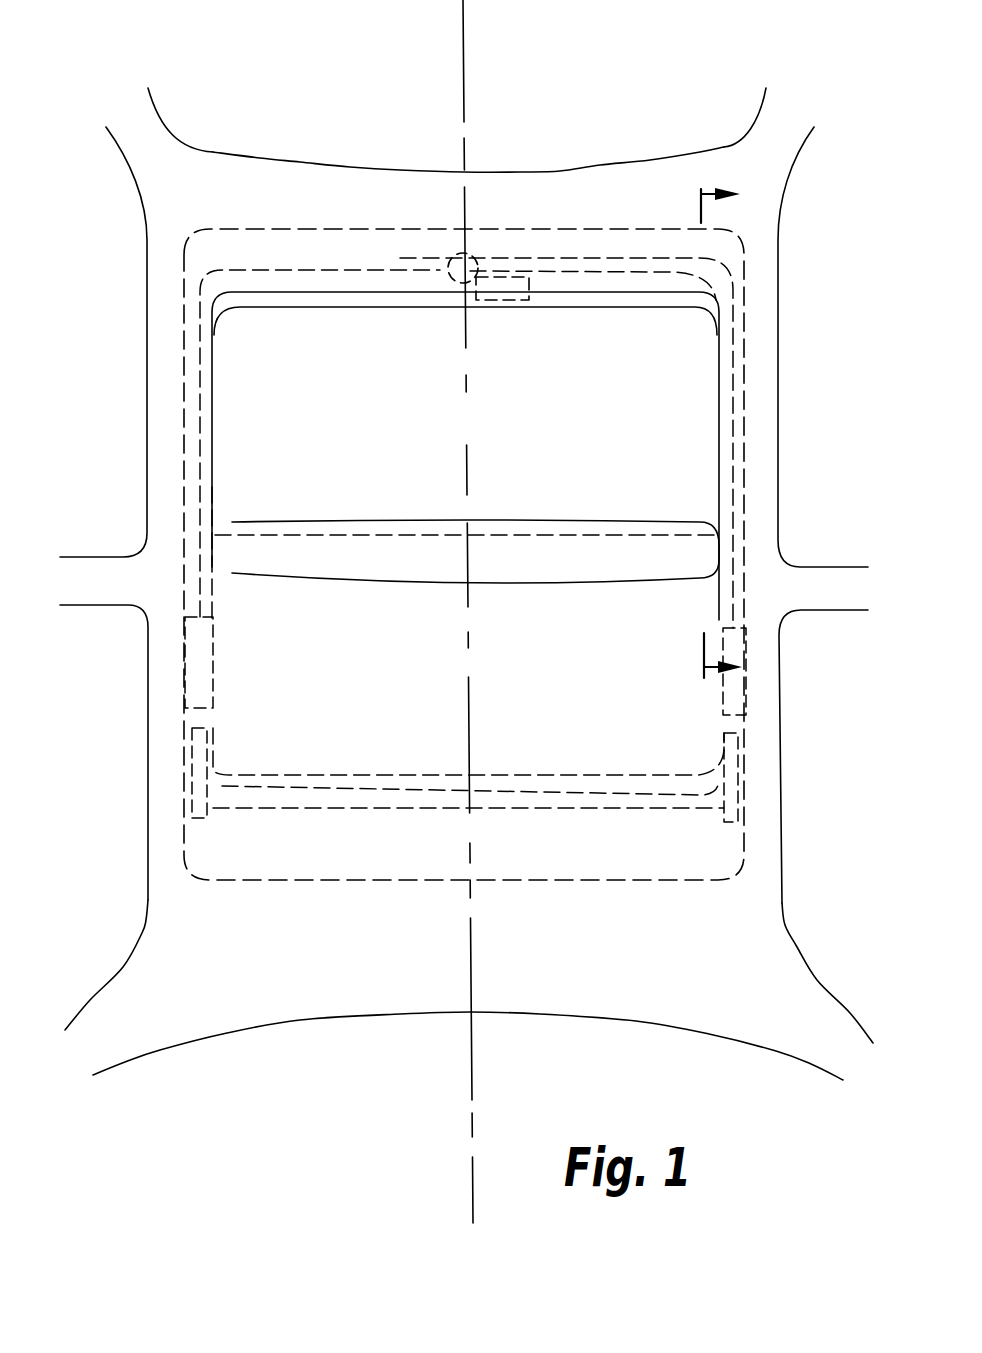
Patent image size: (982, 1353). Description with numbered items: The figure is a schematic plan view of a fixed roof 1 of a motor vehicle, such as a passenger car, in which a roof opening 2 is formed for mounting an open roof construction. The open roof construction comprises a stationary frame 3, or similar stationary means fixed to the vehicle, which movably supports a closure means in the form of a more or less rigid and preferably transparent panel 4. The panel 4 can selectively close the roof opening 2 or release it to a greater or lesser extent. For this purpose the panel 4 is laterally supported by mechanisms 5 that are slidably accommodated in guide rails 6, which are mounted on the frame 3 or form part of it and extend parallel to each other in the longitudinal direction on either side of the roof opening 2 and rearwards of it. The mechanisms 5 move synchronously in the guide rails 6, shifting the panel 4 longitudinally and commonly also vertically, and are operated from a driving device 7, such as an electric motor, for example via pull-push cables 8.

The fixed roof 1 is at (145, 972).
The roof opening 2 is at (715, 390).
The stationary frame 3 is at (748, 845).
The panel 4 is at (669, 523).
The mechanisms 5 is at (185, 656).
The guide rails 6 is at (195, 362).
The driving device 7 is at (503, 275).
The pull-push cables 8 is at (350, 270).